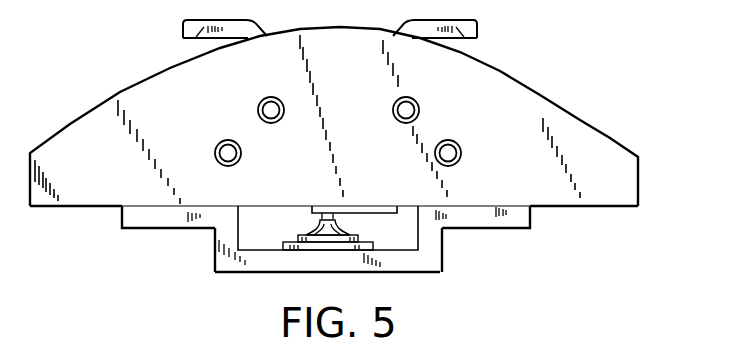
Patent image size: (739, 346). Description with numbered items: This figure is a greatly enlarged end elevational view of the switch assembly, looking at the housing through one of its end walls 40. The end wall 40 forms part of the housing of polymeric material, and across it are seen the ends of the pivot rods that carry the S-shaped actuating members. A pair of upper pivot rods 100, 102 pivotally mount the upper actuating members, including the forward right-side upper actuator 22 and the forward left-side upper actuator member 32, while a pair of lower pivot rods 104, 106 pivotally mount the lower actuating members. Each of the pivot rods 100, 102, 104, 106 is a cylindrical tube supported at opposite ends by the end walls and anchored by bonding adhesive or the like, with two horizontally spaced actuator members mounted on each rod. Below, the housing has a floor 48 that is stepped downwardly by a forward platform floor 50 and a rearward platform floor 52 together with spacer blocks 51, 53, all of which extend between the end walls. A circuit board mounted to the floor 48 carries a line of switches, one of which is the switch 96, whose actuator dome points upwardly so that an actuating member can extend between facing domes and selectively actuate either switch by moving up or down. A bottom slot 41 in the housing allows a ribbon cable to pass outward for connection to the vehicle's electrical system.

The upper actuator 22 is at (184, 38).
The forward upper actuator member 32 is at (477, 36).
The end wall 40 is at (634, 187).
The bottom slot 41 is at (371, 207).
The floor 48 is at (382, 263).
The forward platform floor 50 is at (185, 232).
The spacer block 51 is at (213, 248).
The rearward platform floor 52 is at (503, 229).
The spacer block 53 is at (447, 232).
The switch 96 is at (312, 230).
The upper pivot rod 100 is at (262, 101).
The upper pivot rod 102 is at (419, 109).
The lower pivot rod 104 is at (216, 150).
The lower pivot rod 106 is at (458, 146).